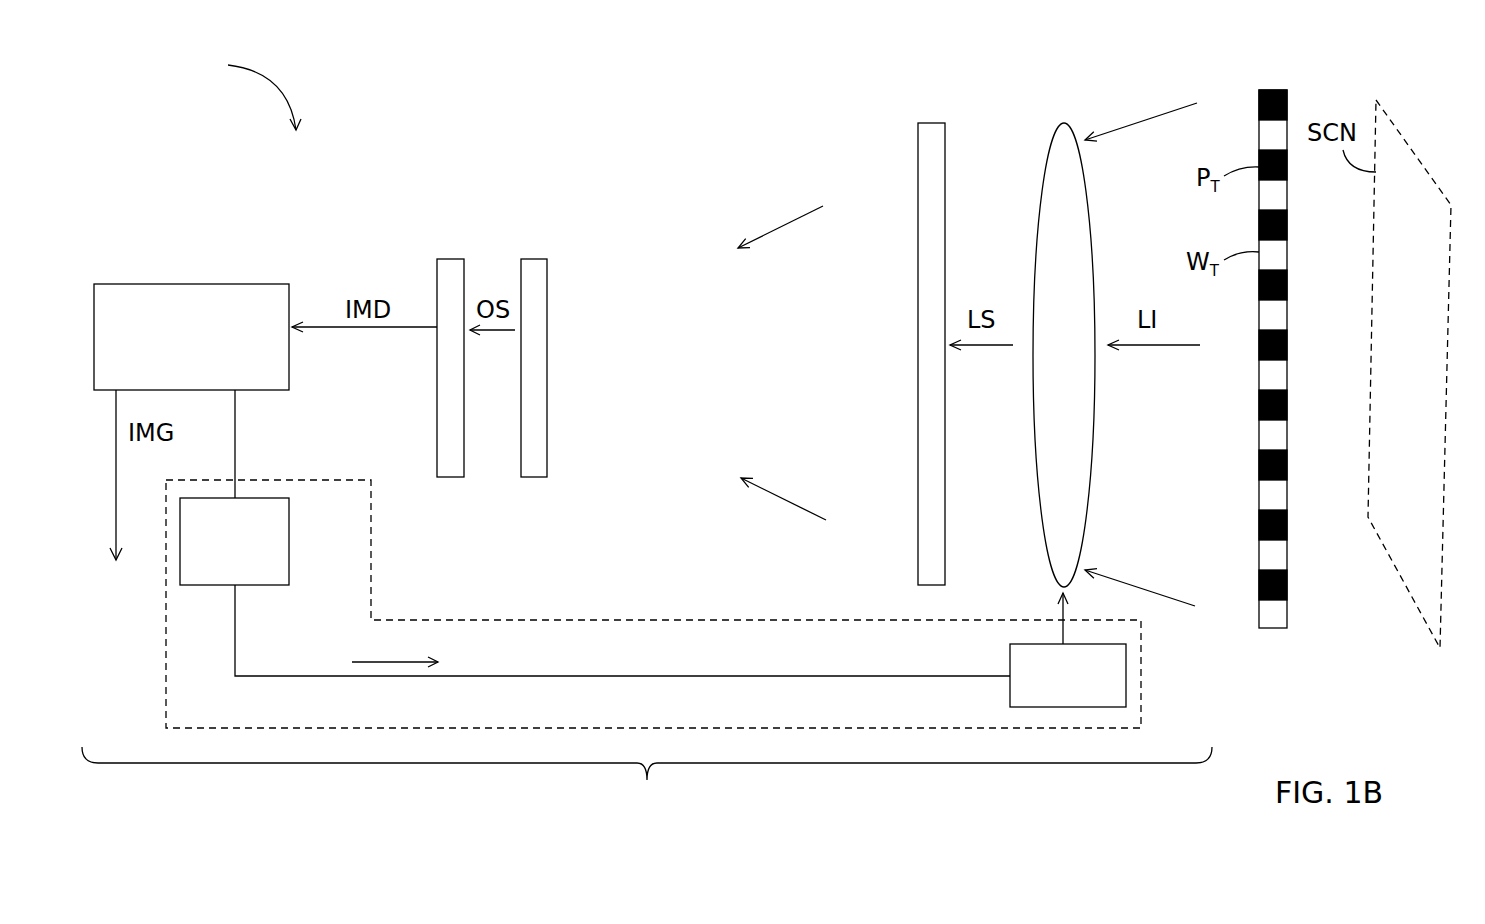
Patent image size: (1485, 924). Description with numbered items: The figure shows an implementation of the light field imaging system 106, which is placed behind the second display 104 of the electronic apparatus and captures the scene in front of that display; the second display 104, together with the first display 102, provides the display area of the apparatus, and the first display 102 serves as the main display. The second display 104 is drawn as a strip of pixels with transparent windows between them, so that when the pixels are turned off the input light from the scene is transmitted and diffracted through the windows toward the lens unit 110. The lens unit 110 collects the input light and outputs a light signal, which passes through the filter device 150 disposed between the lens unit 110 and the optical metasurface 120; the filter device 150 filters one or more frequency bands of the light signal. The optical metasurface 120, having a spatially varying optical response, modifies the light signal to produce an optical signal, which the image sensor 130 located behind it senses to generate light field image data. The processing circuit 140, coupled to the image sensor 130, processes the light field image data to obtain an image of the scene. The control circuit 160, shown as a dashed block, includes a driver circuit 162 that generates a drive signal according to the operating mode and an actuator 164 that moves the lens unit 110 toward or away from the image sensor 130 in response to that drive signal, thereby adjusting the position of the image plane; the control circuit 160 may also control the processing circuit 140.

The first display 102 is at (647, 782).
The second display 104 is at (1272, 90).
The light field imaging system 106 is at (264, 97).
The lens unit 110 is at (1063, 123).
The optical metasurface 120 is at (527, 258).
The image sensor 130 is at (452, 258).
The processing circuit 140 is at (213, 284).
The filter device 150 is at (922, 122).
The control circuit 160 is at (310, 481).
The driver circuit 162 is at (289, 562).
The actuator 164 is at (1126, 676).